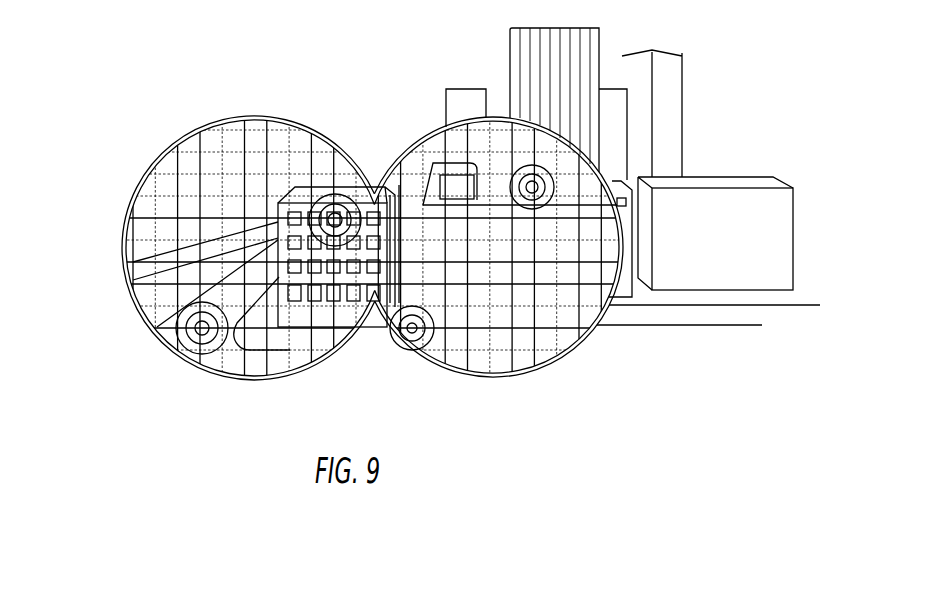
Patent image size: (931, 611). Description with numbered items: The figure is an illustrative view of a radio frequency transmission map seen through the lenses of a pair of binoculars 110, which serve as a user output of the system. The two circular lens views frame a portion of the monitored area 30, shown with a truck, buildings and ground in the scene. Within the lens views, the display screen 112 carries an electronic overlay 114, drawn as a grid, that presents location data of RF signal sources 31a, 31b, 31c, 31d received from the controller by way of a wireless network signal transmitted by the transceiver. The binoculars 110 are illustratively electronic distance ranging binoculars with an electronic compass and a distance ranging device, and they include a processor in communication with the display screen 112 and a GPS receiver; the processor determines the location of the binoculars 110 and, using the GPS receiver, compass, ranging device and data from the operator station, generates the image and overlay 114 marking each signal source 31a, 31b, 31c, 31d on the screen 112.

The monitored area 30 is at (712, 57).
The binoculars 110 is at (121, 295).
The display screen 112 is at (170, 148).
The electronic overlay 114 is at (255, 125).
The RF signal source 31a is at (200, 331).
The RF signal source 31b is at (340, 216).
The RF signal source 31c is at (408, 342).
The RF signal source 31d is at (532, 187).